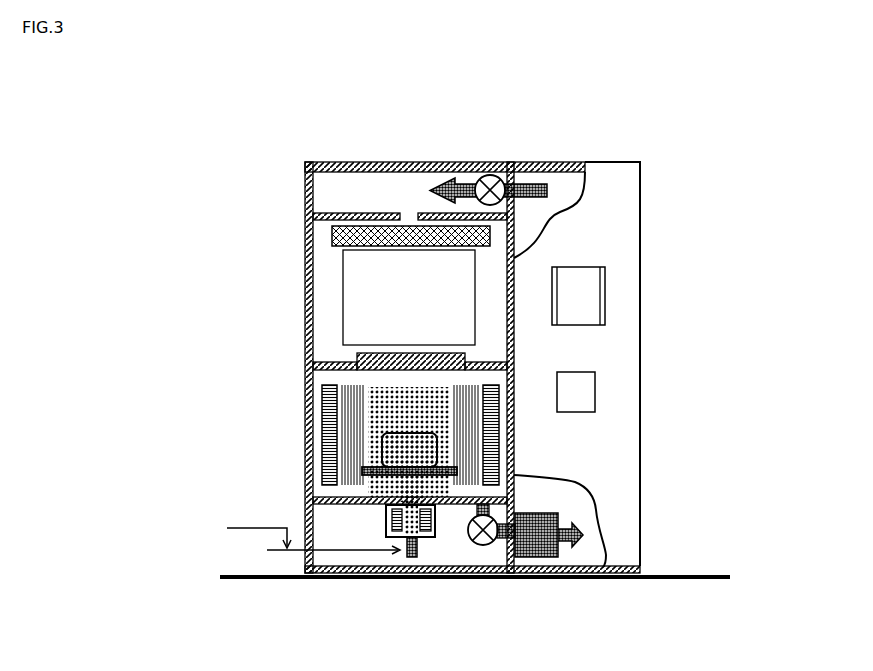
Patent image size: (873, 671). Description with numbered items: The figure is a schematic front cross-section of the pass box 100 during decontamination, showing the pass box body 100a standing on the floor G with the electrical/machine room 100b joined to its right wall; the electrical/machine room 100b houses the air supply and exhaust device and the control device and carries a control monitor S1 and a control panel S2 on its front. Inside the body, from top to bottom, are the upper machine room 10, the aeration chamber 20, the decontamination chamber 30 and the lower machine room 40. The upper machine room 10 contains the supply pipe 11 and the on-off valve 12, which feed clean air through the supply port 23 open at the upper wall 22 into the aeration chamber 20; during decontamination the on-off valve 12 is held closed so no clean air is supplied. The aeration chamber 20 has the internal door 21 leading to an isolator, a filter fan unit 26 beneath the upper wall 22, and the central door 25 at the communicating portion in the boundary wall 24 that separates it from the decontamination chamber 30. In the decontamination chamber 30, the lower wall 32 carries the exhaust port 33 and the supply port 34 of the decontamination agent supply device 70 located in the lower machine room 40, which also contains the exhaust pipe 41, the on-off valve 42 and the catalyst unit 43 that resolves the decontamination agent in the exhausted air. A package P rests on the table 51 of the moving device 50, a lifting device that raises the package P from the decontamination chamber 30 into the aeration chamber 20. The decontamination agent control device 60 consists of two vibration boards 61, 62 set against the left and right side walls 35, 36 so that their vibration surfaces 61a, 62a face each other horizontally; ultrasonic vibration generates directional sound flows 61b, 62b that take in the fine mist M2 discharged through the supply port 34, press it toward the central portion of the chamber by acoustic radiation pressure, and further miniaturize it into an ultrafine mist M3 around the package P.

The pass box 100 is at (447, 124).
The pass box body 100a is at (340, 160).
The electrical/machine room 100b is at (605, 160).
The upper machine room 10 is at (290, 198).
The supply pipe 11 is at (453, 183).
The on-off valve 12 is at (490, 175).
The aeration chamber 20 is at (292, 266).
The internal door 21 is at (370, 273).
The upper wall 22 is at (313, 228).
The supply port 23 is at (408, 206).
The boundary wall 24 is at (313, 352).
The central door 25 is at (357, 355).
The filter fan unit 26 is at (305, 240).
The decontamination chamber 30 is at (292, 400).
The lower wall 32 is at (313, 488).
The exhaust port 33 is at (458, 505).
The supply port 34 is at (386, 540).
The side wall 35 is at (428, 433).
The side wall 36 is at (313, 378).
The lower machine room 40 is at (292, 523).
The exhaust pipe 41 is at (580, 577).
The on-off valve 42 is at (486, 548).
The catalyst unit 43 is at (535, 557).
The moving device 50 is at (377, 505).
The table 51 is at (395, 505).
The decontamination agent control device 60 is at (313, 432).
The vibration board 61 is at (597, 431).
The vibration surface 61a is at (514, 455).
The sound flow 61b is at (515, 412).
The vibration board 62 is at (256, 435).
The vibration surface 62a is at (313, 452).
The sound flow 62b is at (313, 417).
The decontamination agent supply device 70 is at (417, 540).
The control monitor S1 is at (605, 290).
The control panel S2 is at (595, 380).
The fine mist M2 is at (400, 437).
The ultrafine mist M3 is at (408, 470).
The package P is at (440, 405).
The floor G is at (693, 575).